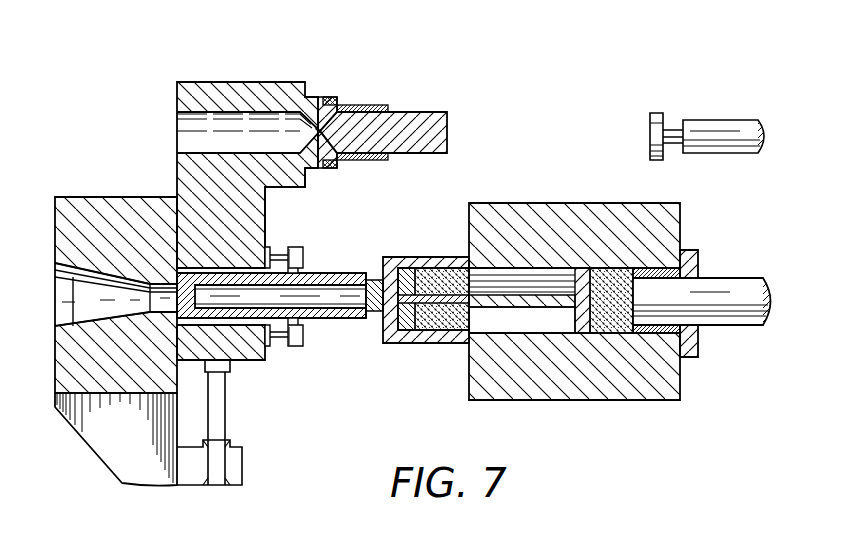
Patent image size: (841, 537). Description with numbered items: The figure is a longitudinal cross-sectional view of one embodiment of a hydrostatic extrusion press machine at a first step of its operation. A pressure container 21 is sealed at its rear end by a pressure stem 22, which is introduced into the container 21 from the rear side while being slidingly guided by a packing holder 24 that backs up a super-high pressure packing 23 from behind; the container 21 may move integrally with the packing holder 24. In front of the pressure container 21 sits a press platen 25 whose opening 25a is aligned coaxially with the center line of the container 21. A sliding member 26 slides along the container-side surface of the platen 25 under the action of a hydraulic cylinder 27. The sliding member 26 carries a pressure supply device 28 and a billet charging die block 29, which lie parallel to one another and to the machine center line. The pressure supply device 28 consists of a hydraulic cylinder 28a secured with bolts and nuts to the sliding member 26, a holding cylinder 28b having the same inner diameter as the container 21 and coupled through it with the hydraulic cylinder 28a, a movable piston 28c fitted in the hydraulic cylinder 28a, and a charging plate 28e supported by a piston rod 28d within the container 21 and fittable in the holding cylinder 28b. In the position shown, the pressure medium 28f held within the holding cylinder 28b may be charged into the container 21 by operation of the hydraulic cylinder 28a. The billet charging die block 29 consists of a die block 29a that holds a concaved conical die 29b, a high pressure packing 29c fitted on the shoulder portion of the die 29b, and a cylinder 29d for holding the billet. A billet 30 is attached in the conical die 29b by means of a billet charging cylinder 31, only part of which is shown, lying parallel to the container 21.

The pressure container 21 is at (535, 216).
The pressure stem 22 is at (740, 290).
The super-high pressure packing 23 is at (655, 272).
The packing holder 24 is at (697, 262).
The press platen 25 is at (147, 212).
The opening 25a is at (85, 298).
The sliding member 26 is at (263, 213).
The hydraulic cylinder 27 is at (226, 397).
The pressure supply device 28 is at (321, 337).
The hydraulic cylinder 28a is at (340, 274).
The holding cylinder 28b is at (404, 258).
The movable piston 28c is at (337, 319).
The piston rod 28d is at (456, 306).
The charging plate 28e is at (576, 330).
The pressure medium 28f is at (440, 284).
The billet charging die block 29 is at (205, 80).
The die block 29a is at (250, 90).
The die 29b is at (309, 97).
The high pressure packing 29c is at (343, 83).
The cylinder 29d is at (372, 105).
The billet 30 is at (432, 118).
The billet charging cylinder 31 is at (715, 130).